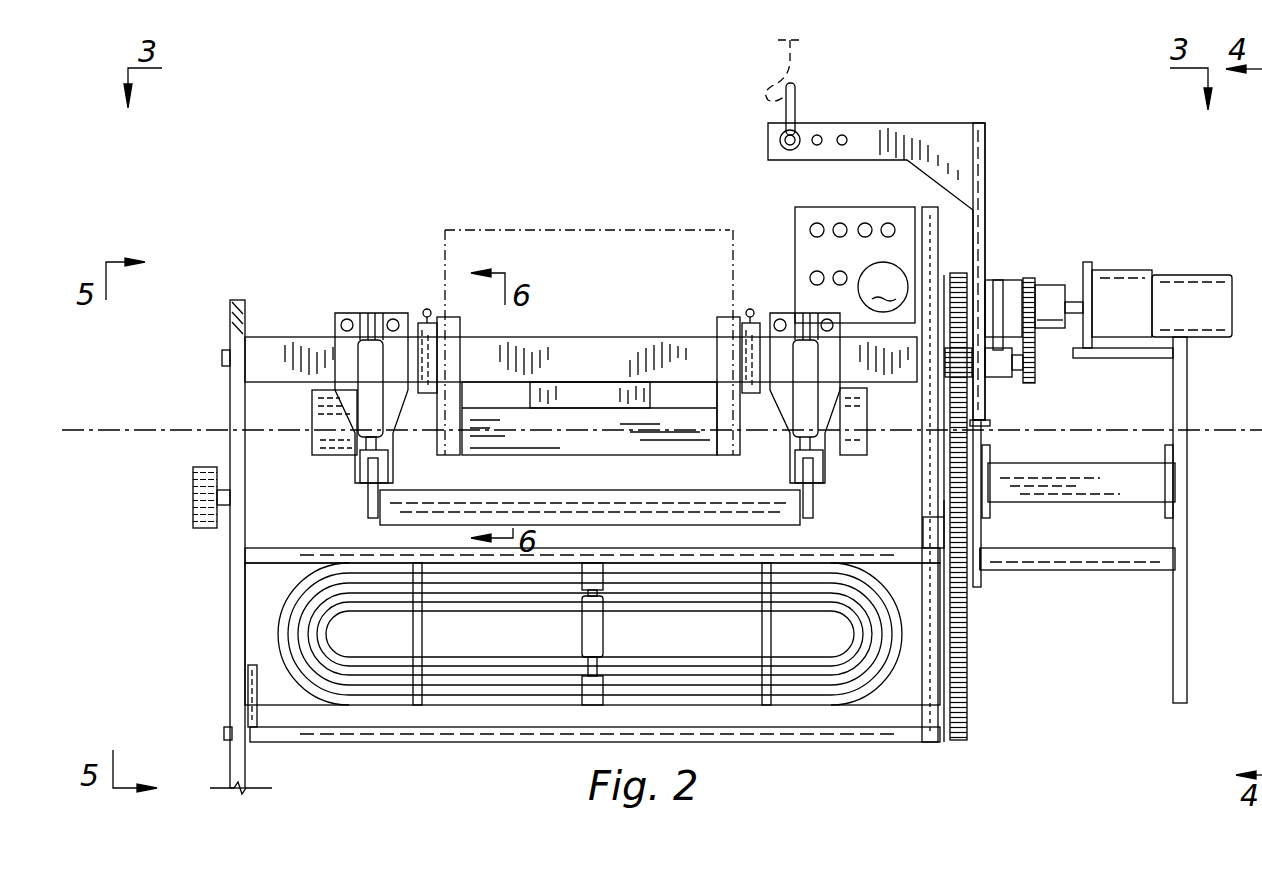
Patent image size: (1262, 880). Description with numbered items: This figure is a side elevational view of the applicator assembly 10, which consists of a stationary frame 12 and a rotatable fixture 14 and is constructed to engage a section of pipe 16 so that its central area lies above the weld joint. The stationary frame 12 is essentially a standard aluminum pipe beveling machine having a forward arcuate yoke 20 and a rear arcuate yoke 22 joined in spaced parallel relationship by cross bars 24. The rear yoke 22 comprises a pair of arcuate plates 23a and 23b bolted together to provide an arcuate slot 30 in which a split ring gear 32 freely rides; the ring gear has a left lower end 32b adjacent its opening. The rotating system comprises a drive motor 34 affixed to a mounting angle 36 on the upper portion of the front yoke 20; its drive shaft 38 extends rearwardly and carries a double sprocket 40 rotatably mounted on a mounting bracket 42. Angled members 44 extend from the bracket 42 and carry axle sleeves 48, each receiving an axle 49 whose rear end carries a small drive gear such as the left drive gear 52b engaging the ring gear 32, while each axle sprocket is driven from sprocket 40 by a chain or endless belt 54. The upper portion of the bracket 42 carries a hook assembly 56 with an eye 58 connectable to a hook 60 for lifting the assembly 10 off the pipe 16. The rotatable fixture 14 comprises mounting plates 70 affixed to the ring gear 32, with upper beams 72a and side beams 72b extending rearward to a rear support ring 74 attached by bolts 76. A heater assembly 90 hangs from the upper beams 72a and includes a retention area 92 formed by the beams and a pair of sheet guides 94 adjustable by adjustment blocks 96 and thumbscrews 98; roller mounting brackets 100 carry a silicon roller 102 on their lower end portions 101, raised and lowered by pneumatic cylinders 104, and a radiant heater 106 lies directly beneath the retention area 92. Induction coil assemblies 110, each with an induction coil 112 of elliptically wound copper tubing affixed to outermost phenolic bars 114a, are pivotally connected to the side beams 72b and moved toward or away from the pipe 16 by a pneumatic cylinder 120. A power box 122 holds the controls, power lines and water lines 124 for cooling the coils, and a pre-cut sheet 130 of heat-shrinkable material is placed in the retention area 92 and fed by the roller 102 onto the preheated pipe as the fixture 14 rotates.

The applicator assembly 10 is at (247, 96).
The stationary frame 12 is at (1133, 744).
The rotatable fixture 14 is at (313, 782).
The pipe 16 is at (195, 430).
The forward arcuate yoke 20 is at (1187, 378).
The rear arcuate yoke 22 is at (947, 518).
The arcuate plate 23a is at (975, 535).
The arcuate plate 23b is at (944, 503).
The cross bars 24 is at (1135, 497).
The arcuate slot 30 is at (976, 590).
The split ring gear 32 is at (957, 273).
The left lower end 32b is at (982, 728).
The drive motor 34 is at (1147, 286).
The mounting angle 36 is at (1112, 360).
The drive shaft 38 is at (1099, 304).
The double sprocket 40 is at (1057, 283).
The mounting bracket 42 is at (976, 123).
The angled members 44 is at (1005, 292).
The axle sleeve 48 is at (1000, 378).
The axle 49 is at (1020, 366).
The left small drive gear 52b is at (955, 368).
The chain or endless belt 54 is at (1035, 346).
The hook assembly 56 is at (882, 132).
The eye 58 is at (800, 90).
The hook 60 is at (800, 52).
The mounting plates 70 is at (928, 215).
The upper beams 72a is at (283, 365).
The side beams 72b is at (260, 560).
The rear support ring 74 is at (238, 637).
The bolts 76 is at (222, 357).
The heater assembly 90 is at (303, 507).
The retention area 92 is at (605, 328).
The sheet guides 94 is at (452, 325).
The adjustment blocks 96 is at (422, 350).
The thumbscrews 98 is at (427, 308).
The roller mounting brackets 100 is at (355, 405).
The lower end portions 101 is at (366, 508).
The silicon roller 102 is at (575, 500).
The pneumatic cylinders 104 is at (372, 345).
The radiant heater 106 is at (328, 420).
The induction coil assemblies 110 is at (334, 714).
The induction coil 112 is at (313, 672).
The outermost phenolic bars 114a is at (413, 637).
The pneumatic cylinder 120 is at (582, 637).
The power box 122 is at (818, 215).
The water lines 124 is at (883, 287).
The sheet of heat-shrinkable material 130 is at (683, 230).